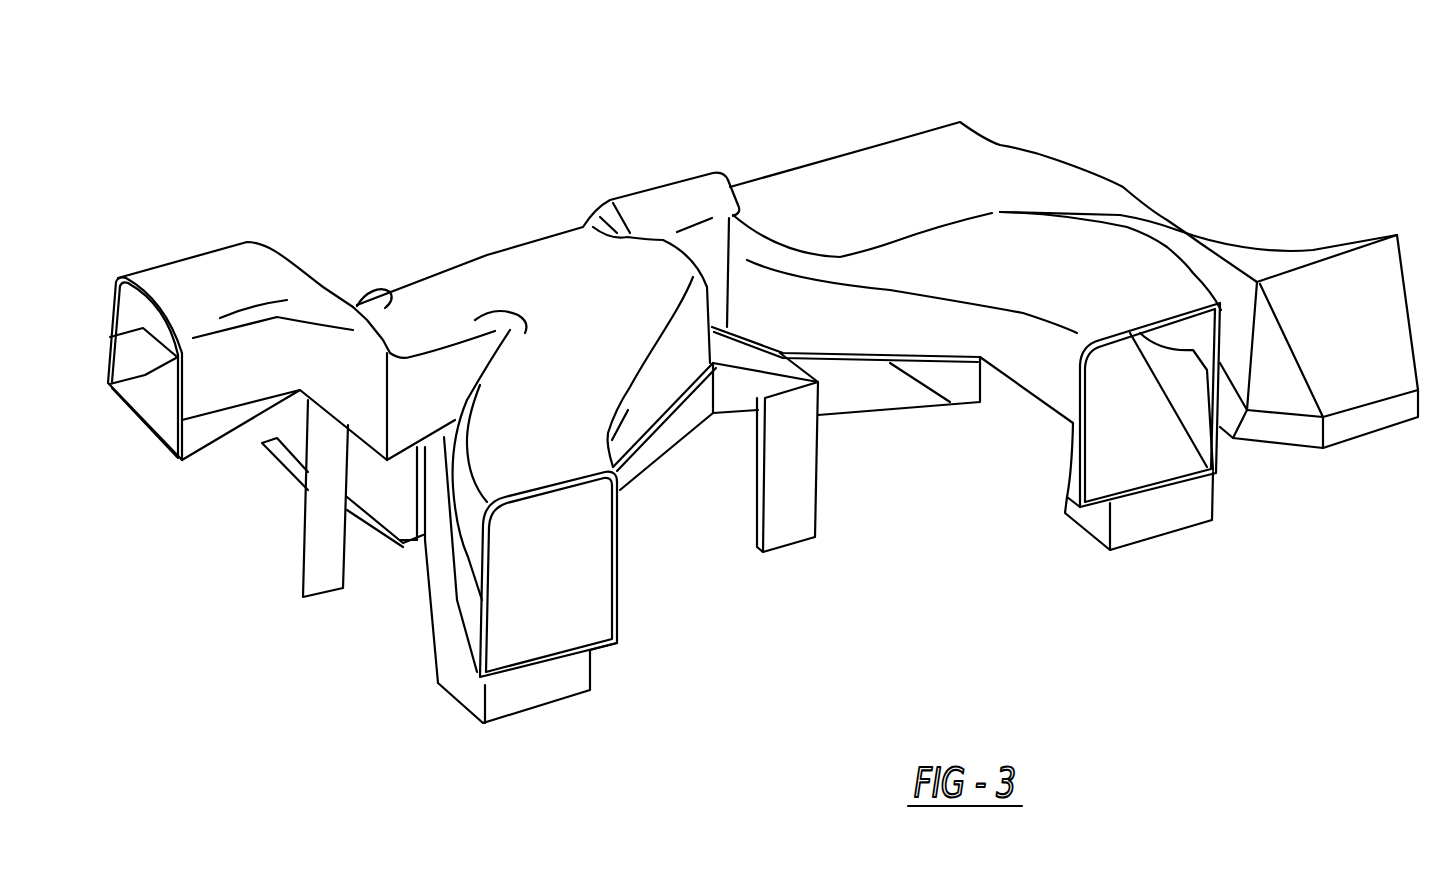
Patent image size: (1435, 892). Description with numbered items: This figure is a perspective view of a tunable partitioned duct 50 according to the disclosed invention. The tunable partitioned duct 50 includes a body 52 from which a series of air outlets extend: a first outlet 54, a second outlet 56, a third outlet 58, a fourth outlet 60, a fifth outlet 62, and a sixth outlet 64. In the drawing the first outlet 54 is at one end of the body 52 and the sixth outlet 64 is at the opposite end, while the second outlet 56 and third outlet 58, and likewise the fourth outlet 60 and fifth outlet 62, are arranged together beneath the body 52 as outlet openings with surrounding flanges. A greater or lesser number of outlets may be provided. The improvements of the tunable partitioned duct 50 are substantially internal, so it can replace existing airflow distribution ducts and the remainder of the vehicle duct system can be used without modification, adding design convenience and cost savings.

The tunable partitioned duct 50 is at (538, 203).
The body 52 is at (903, 183).
The first outlet 54 is at (162, 400).
The second outlet 56 is at (530, 583).
The third outlet 58 is at (517, 698).
The fourth outlet 60 is at (1145, 415).
The fifth outlet 62 is at (1140, 545).
The sixth outlet 64 is at (1393, 327).